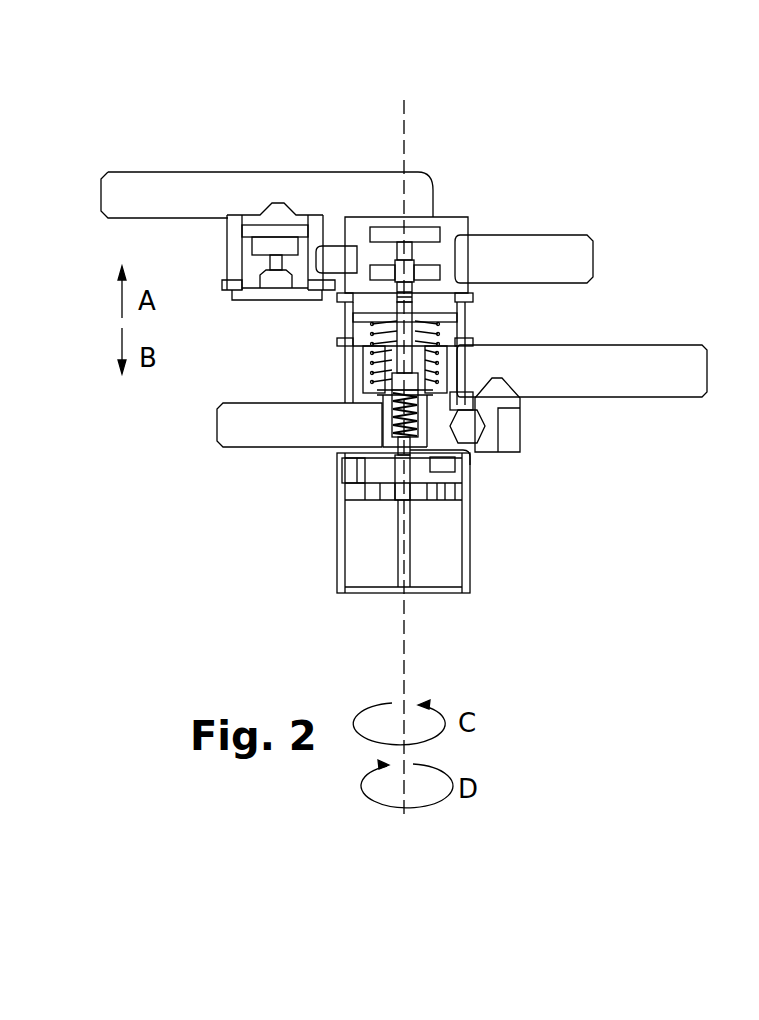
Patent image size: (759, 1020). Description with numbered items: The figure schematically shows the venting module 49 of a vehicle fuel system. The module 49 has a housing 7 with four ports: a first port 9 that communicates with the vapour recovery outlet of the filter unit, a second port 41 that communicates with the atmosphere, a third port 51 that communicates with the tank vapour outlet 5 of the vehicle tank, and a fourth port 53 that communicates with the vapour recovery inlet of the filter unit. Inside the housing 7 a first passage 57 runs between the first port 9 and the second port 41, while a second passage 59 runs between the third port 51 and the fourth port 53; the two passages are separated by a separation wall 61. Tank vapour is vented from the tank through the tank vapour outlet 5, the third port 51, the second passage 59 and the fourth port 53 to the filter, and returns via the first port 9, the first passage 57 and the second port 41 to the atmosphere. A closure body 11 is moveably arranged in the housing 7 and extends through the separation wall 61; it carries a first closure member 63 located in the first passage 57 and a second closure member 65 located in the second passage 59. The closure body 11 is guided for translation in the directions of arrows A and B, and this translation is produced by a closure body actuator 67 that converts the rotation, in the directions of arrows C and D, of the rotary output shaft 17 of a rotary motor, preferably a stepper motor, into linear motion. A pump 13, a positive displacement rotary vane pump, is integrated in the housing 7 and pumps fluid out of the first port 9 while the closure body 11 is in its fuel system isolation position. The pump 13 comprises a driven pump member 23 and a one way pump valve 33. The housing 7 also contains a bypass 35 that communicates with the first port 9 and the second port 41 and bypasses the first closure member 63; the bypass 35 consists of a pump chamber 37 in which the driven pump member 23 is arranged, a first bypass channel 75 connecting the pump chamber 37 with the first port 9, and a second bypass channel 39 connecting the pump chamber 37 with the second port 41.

The tank vapour outlet 5 is at (418, 572).
The housing 7 is at (340, 350).
The first port 9 is at (250, 425).
The closure body 11 is at (372, 358).
The pump 13 is at (488, 523).
The rotary output shaft 17 is at (400, 488).
The driven pump member 23 is at (437, 490).
The one way pump valve 33 is at (450, 466).
The bypass 35 is at (383, 470).
The pump chamber 37 is at (420, 505).
The second bypass channel 39 is at (452, 477).
The second port 41 is at (657, 378).
The module 49 is at (535, 167).
The third port 51 is at (548, 267).
The fourth port 53 is at (153, 200).
The first passage 57 is at (443, 372).
The second passage 59 is at (440, 252).
The separation wall 61 is at (453, 317).
The first closure member 63 is at (363, 468).
The second closure member 65 is at (380, 269).
The closure body actuator 67 is at (430, 470).
The first bypass channel 75 is at (350, 470).